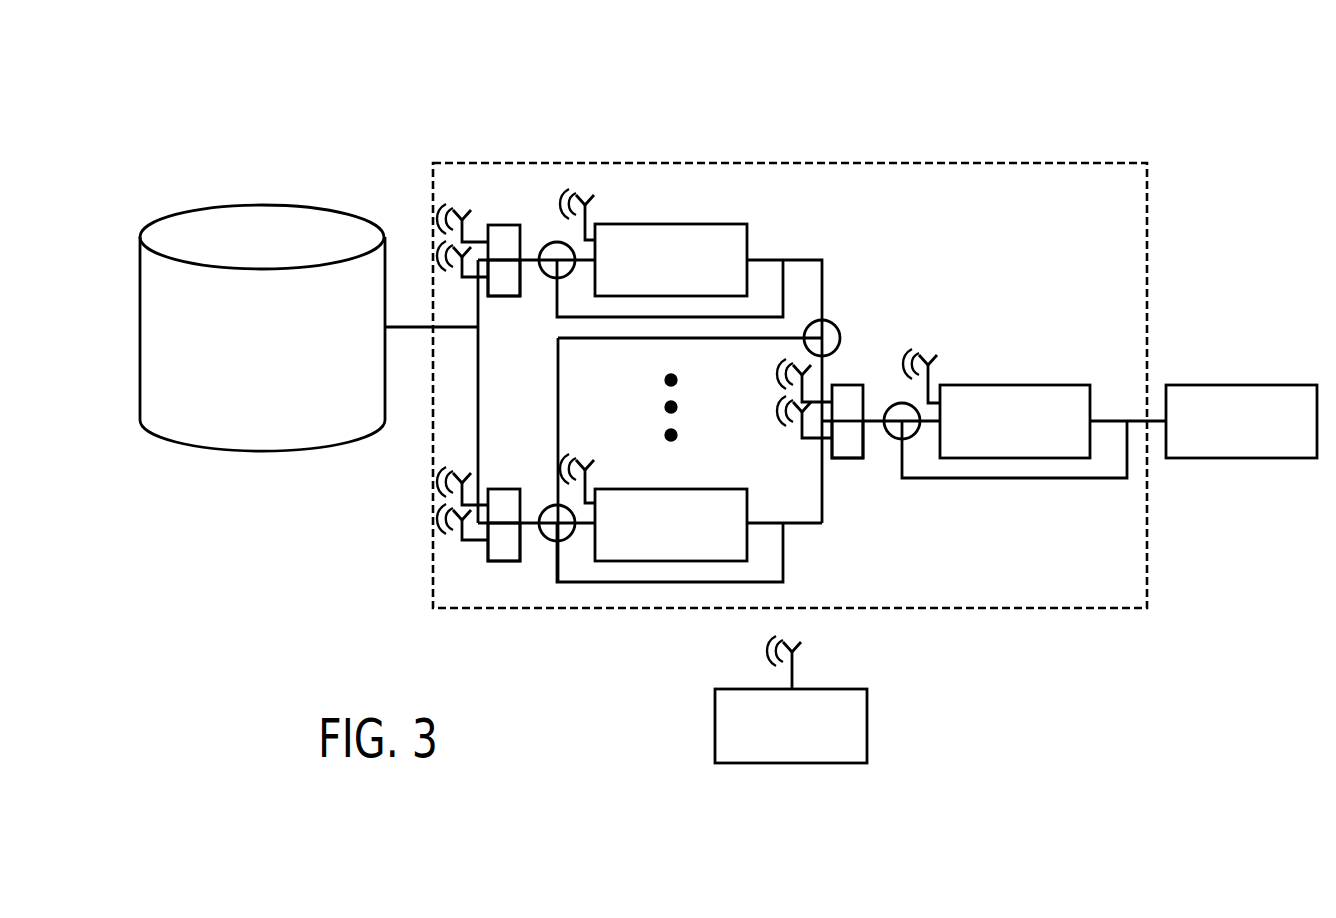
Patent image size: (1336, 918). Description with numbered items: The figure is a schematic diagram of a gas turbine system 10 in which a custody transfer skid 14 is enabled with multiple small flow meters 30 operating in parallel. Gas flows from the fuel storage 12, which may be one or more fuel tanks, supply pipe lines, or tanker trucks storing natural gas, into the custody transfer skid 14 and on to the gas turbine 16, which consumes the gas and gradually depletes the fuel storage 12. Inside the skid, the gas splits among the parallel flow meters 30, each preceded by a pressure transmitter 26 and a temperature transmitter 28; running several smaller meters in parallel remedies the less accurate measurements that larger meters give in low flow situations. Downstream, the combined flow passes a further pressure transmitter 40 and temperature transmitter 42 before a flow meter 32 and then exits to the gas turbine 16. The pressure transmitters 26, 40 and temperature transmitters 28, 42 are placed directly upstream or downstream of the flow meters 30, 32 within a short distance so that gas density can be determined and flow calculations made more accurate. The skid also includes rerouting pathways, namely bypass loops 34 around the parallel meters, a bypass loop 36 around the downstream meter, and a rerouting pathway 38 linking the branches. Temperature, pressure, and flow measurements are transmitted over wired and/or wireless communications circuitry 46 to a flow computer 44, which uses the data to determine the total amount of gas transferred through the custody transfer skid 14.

The gas turbine system 10 is at (192, 90).
The fuel storage 12 is at (226, 228).
The custody transfer skid 14 is at (790, 163).
The gas turbine 16 is at (1241, 385).
The pressure transmitter 26 is at (500, 225).
The temperature transmitter 28 is at (505, 296).
The flow meter 30 is at (672, 224).
The flow meter 32 is at (1015, 385).
The bypass loop 34 is at (783, 288).
The bypass loop 36 is at (1010, 478).
The rerouting pathway 38 is at (822, 292).
The pressure transmitter 40 is at (846, 385).
The temperature transmitter 42 is at (848, 458).
The flow computer 44 is at (867, 728).
The communications circuitry 46 is at (792, 675).